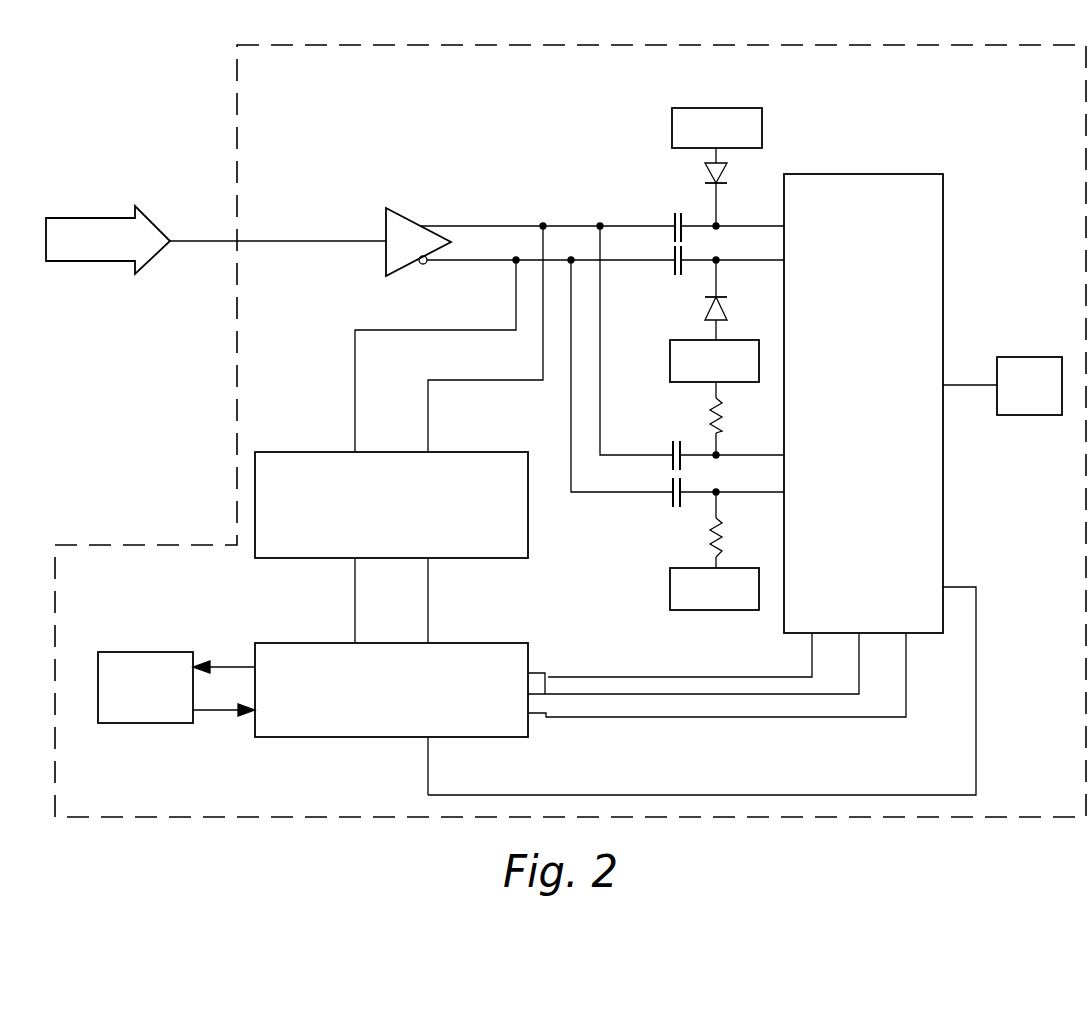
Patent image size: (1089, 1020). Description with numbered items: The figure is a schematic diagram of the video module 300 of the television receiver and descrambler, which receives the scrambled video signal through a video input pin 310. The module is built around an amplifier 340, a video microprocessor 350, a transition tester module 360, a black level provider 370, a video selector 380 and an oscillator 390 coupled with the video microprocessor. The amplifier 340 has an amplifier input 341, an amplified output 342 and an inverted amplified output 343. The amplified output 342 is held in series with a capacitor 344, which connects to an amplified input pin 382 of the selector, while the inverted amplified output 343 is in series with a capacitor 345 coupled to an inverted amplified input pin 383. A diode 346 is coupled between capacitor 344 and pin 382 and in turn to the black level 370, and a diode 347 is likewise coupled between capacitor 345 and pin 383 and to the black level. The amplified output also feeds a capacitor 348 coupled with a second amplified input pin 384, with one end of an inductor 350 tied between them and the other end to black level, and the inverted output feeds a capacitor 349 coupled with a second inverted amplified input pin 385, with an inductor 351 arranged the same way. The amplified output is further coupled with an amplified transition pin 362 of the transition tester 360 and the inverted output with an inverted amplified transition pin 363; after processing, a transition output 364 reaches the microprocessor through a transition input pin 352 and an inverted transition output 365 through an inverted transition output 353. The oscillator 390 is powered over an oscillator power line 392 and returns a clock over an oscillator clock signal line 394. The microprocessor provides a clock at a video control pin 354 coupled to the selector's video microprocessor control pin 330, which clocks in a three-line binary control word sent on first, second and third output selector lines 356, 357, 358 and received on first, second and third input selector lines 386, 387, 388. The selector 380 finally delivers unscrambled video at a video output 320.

The video module 300 is at (1054, 87).
The video input pin 310 is at (170, 233).
The video output 320 is at (1015, 357).
The video microprocessor control pin 330 is at (958, 587).
The amplifier 340 is at (392, 208).
The amplifier input 341 is at (345, 240).
The amplified output 342 is at (450, 226).
The inverted amplified output 343 is at (424, 264).
The capacitor 344 is at (672, 215).
The capacitor 345 is at (672, 272).
The diode 346 is at (727, 176).
The diode 347 is at (708, 304).
The capacitor 348 is at (672, 449).
The capacitor 349 is at (672, 505).
The video microprocessor 350 is at (722, 412).
The inductor 351 is at (722, 543).
The transition input pin 352 is at (428, 638).
The inverted transition output 353 is at (355, 638).
The video control pin 354 is at (428, 760).
The first output selector line 356 is at (540, 672).
The second output selector line 357 is at (548, 677).
The third output selector line 358 is at (548, 718).
The transition tester module 360 is at (528, 527).
The amplified transition pin 362 is at (428, 440).
The inverted amplified transition pin 363 is at (355, 440).
The transition output 364 is at (428, 565).
The inverted transition output 365 is at (355, 565).
The black level provider 370 is at (720, 108).
The video selector 380 is at (943, 268).
The amplified input pin 382 is at (764, 228).
The inverted amplified input pin 383 is at (764, 262).
The second amplified input pin 384 is at (764, 456).
The second inverted amplified input pin 385 is at (764, 492).
The first input selector line 386 is at (812, 640).
The second input selector line 387 is at (859, 645).
The third input selector line 388 is at (906, 640).
The oscillator 390 is at (125, 723).
The oscillator power line 392 is at (232, 662).
The oscillator clock signal line 394 is at (228, 712).